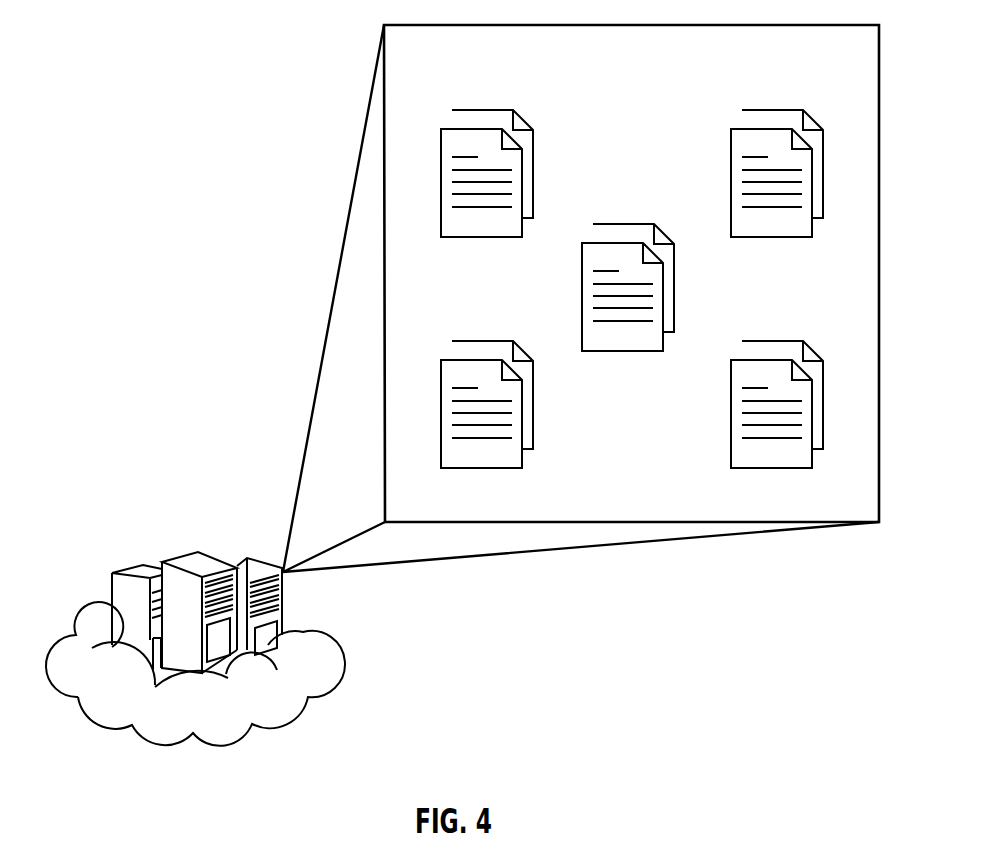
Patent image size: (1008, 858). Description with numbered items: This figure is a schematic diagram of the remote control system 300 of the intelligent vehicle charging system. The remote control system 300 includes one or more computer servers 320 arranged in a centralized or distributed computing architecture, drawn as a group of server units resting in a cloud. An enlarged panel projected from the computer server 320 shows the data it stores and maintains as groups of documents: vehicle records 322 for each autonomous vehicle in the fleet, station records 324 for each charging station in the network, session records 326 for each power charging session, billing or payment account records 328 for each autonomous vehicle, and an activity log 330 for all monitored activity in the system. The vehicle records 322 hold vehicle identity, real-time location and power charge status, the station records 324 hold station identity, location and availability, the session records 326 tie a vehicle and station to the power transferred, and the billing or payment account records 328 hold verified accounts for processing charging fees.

The remote control system 300 is at (146, 430).
The computer server 320 is at (210, 553).
The vehicle records 322 is at (482, 110).
The station records 324 is at (772, 110).
The session records 326 is at (623, 224).
The billing or payment account records 328 is at (482, 341).
The activity log 330 is at (772, 341).